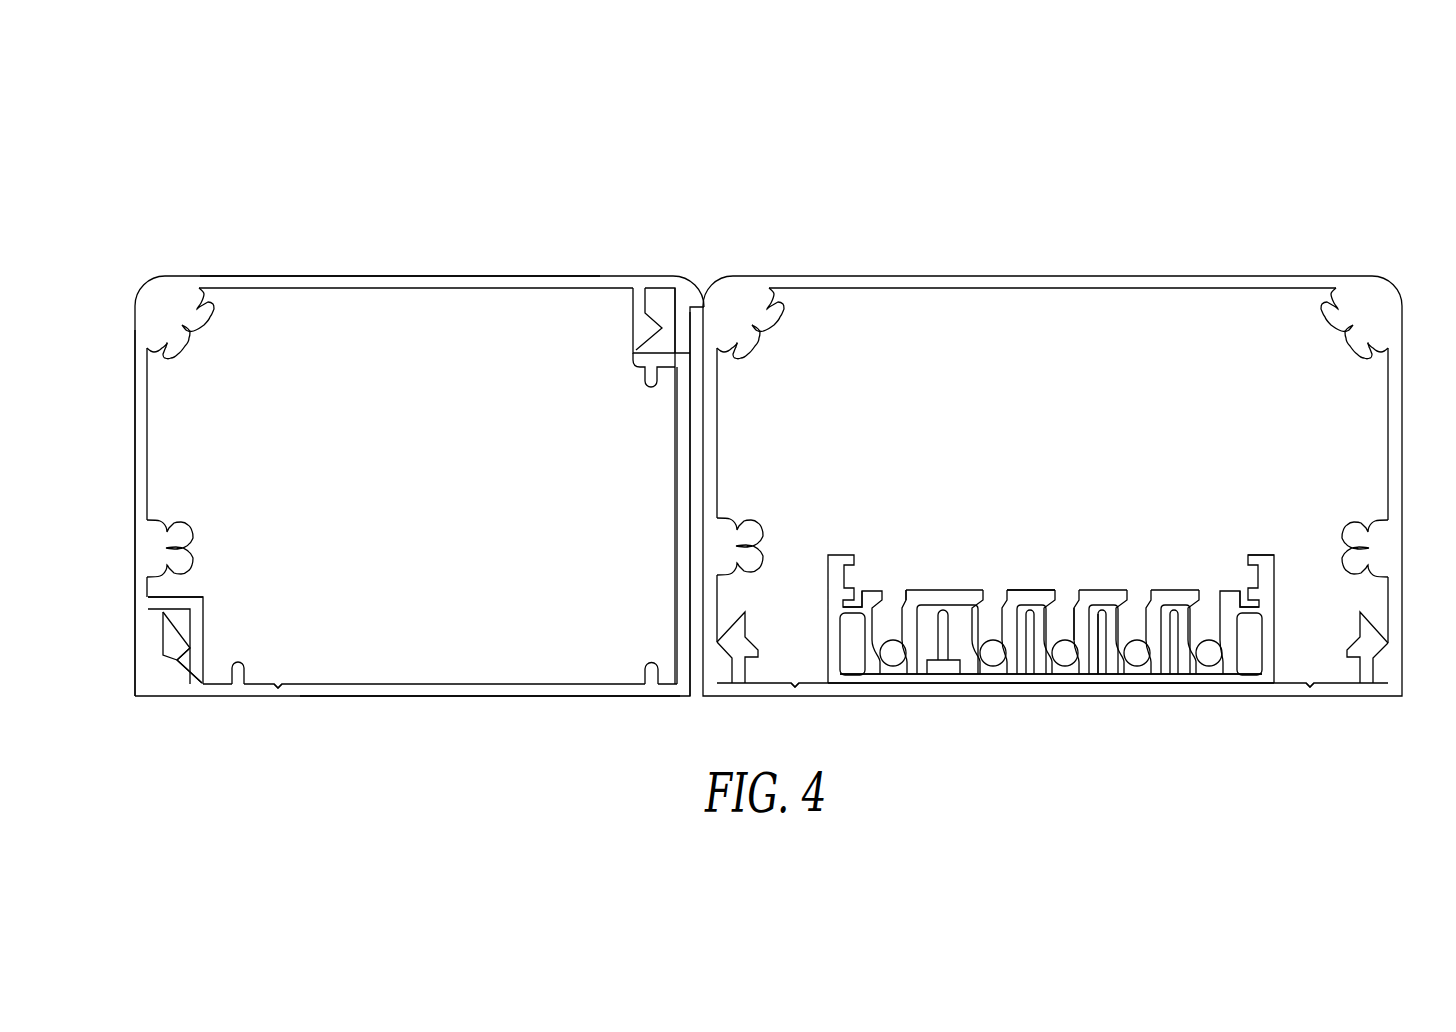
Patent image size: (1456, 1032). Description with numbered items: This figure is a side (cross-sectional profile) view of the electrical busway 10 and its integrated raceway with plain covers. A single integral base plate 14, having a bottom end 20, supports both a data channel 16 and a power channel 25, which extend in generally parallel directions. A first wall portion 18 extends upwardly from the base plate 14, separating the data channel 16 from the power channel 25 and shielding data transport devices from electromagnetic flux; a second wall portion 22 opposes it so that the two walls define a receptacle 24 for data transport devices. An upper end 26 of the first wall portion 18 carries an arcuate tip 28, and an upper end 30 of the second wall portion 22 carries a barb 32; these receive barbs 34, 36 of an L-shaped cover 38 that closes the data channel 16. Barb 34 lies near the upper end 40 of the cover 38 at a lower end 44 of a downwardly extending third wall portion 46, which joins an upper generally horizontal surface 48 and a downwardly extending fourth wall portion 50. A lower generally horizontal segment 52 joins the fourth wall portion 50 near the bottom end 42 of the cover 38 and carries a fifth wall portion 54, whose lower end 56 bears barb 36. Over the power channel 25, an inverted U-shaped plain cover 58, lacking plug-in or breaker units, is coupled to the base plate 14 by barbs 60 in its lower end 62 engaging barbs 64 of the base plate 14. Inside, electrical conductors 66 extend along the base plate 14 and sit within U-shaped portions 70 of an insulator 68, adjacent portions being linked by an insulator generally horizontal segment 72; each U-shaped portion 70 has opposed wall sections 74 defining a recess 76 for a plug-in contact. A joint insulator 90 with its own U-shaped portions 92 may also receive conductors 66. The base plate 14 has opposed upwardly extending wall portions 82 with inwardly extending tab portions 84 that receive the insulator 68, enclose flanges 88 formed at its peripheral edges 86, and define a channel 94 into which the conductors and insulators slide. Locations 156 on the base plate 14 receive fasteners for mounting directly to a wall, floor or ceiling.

The electrical busway 10 is at (1109, 672).
The base plate 14 is at (980, 697).
The data channel 16 is at (342, 660).
The first wall portion 18 is at (677, 490).
The bottom end 20 is at (500, 697).
The second wall portion 22 is at (166, 686).
The receptacle 24 is at (400, 668).
The power channel 25 is at (1018, 511).
The upper end 26 is at (673, 300).
The arcuate tip 28 is at (658, 290).
The upper end 30 is at (163, 620).
The barb 32 is at (187, 618).
The barb 34 is at (642, 352).
The barb 36 is at (188, 662).
The cover 38 is at (421, 262).
The upper end 40 is at (500, 276).
The bottom end 42 is at (135, 665).
The lower end 44 is at (640, 320).
The third wall portion 46 is at (633, 300).
The upper generally horizontal surface 48 is at (295, 276).
The fourth wall portion 50 is at (135, 404).
The lower generally horizontal segment 52 is at (182, 597).
The fifth wall portion 54 is at (200, 624).
The lower end 56 is at (202, 640).
The plain cover 58 is at (1198, 262).
The barbs 60 is at (710, 665).
The lower end 62 is at (722, 668).
The barbs 64 is at (745, 615).
The electrical conductors 66 is at (893, 655).
The insulator 68 is at (1020, 590).
The U-shaped portions 70 is at (978, 625).
The insulator generally horizontal segment 72 is at (945, 590).
The opposed wall sections 74 is at (882, 630).
The recess 76 is at (905, 625).
The upwardly extending wall portions 82 is at (835, 667).
The tab portions 84 is at (845, 556).
The peripheral edges 86 is at (840, 613).
The flanges 88 is at (845, 623).
The joint insulator 90 is at (1085, 674).
The U-shaped portions 92 is at (906, 668).
The channel 94 is at (1268, 570).
The locations 156 is at (278, 690).